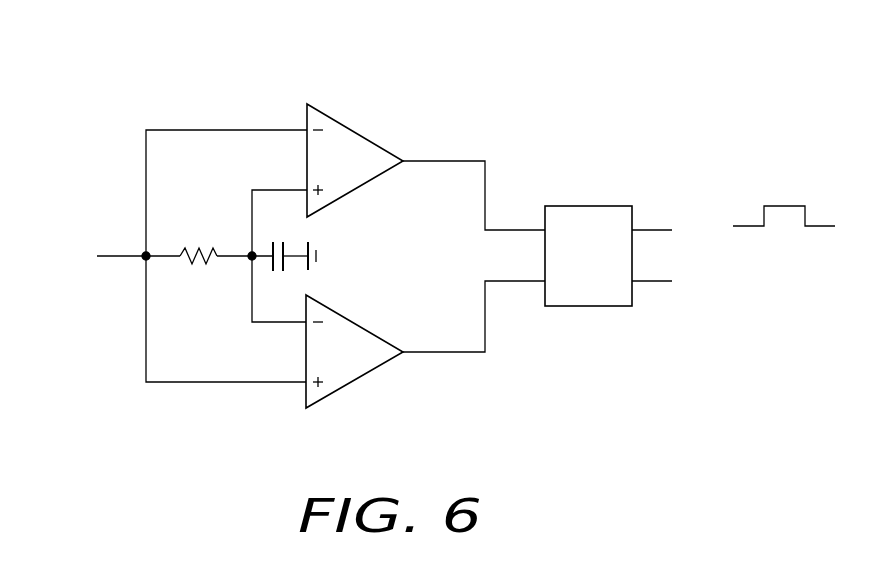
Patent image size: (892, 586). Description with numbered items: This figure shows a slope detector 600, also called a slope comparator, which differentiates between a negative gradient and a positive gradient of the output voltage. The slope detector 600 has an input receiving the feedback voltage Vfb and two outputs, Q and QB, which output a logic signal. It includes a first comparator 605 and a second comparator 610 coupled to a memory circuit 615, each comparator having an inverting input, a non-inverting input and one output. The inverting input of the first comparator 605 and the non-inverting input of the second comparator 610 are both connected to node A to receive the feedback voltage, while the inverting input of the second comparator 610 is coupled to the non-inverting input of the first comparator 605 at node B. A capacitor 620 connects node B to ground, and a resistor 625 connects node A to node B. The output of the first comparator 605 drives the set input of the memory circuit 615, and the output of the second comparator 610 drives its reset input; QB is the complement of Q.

The slope detector 600 is at (163, 32).
The first comparator 605 is at (373, 140).
The second comparator 610 is at (358, 378).
The memory circuit 615 is at (580, 306).
The capacitor 620 is at (290, 243).
The resistor 625 is at (200, 240).